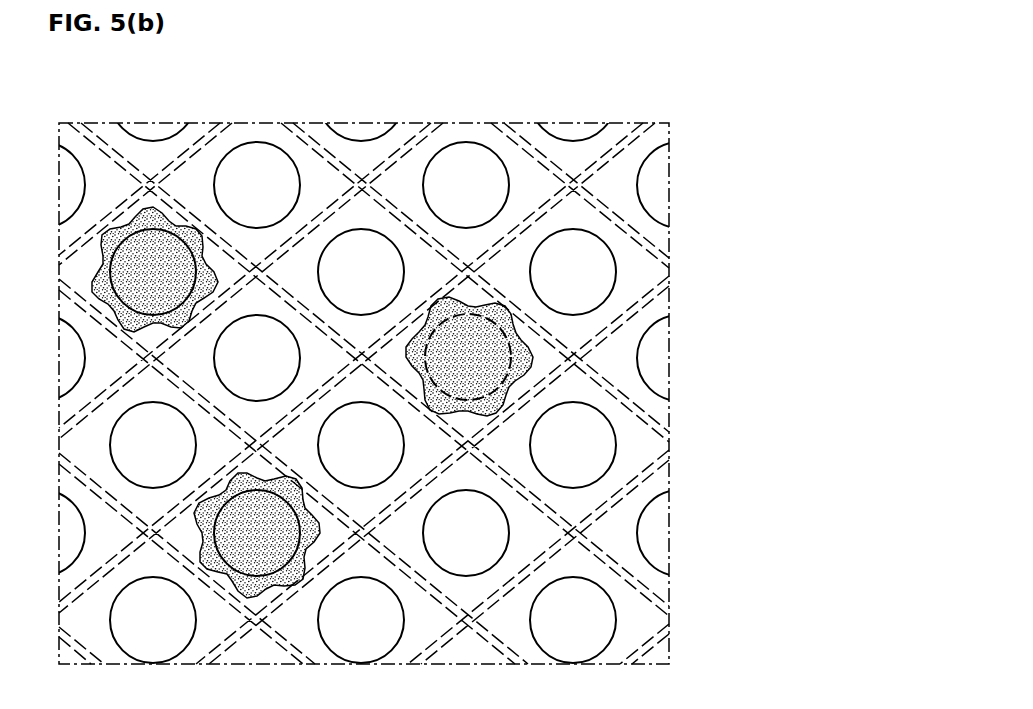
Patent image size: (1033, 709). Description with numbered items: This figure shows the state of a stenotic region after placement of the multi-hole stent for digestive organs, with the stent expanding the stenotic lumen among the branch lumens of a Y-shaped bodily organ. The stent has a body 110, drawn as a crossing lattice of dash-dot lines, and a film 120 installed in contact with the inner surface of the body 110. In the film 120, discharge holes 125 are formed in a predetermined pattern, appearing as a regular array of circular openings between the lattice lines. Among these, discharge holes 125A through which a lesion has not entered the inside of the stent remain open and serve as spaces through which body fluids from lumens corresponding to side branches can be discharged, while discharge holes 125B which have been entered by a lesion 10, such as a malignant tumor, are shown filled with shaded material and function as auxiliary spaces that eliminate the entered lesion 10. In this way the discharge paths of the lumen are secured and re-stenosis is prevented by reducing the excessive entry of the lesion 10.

The foreign particle 10 is at (466, 312).
The body 110 is at (625, 163).
The film 120 is at (635, 285).
The discharge holes 125 is at (570, 470).
The discharge holes through which a lesion has not entered 125A is at (505, 508).
The discharge holes which have been entered by a lesion 125B is at (517, 333).